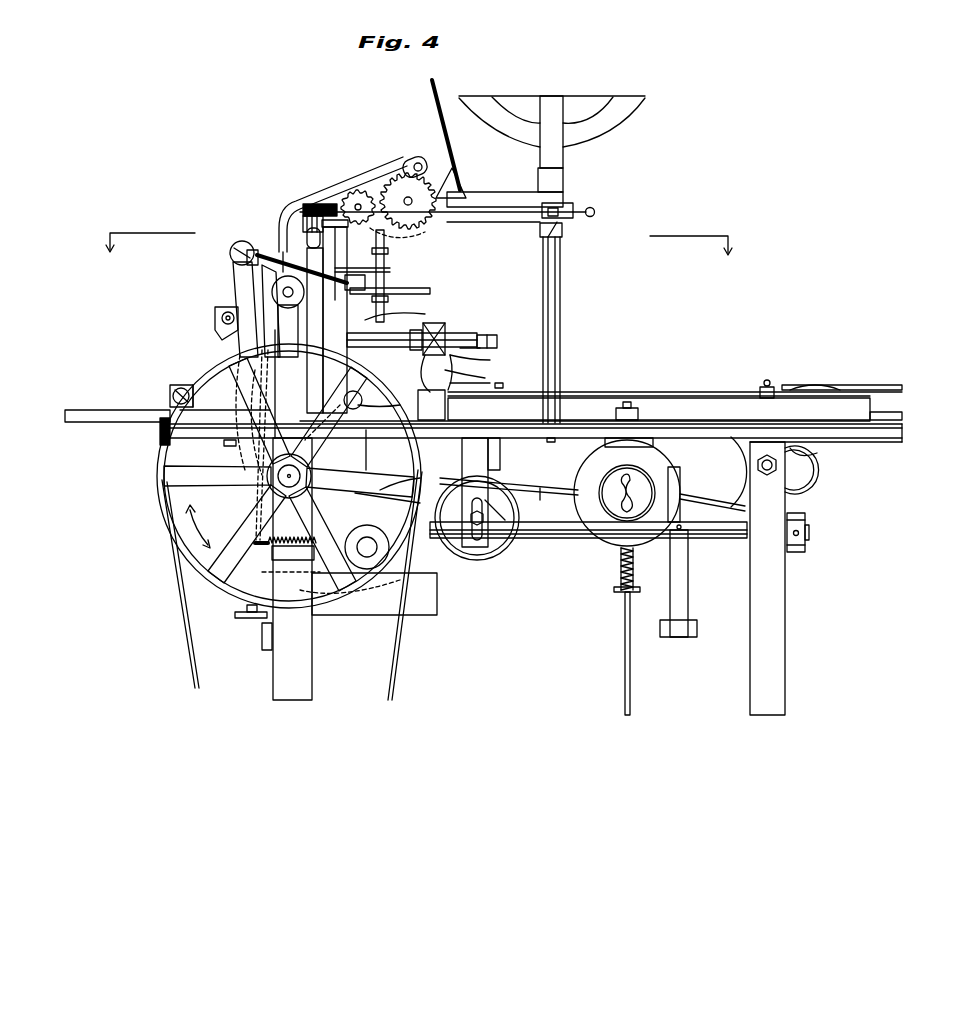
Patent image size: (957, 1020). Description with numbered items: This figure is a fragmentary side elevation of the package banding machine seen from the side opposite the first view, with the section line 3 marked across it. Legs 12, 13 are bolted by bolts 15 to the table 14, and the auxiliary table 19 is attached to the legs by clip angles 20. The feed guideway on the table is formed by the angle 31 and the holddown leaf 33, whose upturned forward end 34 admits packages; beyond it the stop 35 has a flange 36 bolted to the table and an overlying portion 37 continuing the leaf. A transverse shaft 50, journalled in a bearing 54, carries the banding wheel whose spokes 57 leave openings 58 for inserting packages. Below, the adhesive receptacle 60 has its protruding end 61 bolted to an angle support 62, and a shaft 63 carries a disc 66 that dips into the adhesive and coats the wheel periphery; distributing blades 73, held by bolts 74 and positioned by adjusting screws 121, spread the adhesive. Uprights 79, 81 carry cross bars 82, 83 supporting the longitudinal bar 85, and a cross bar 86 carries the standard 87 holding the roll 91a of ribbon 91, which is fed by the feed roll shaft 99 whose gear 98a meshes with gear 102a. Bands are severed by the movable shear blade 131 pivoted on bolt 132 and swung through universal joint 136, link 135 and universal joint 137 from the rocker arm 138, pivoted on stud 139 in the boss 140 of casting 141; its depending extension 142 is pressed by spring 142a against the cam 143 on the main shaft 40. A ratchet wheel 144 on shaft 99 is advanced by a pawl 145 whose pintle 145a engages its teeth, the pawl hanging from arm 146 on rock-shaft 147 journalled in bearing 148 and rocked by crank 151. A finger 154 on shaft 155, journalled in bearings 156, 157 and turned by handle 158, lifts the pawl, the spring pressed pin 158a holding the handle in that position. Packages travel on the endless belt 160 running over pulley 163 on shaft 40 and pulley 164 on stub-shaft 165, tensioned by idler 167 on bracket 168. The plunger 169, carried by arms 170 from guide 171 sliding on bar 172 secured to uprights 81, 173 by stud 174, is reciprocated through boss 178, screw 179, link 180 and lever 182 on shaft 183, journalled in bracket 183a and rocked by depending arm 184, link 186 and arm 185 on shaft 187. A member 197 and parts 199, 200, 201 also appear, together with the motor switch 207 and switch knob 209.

The section line 3- 3 is at (417, 257).
The leg 12 is at (288, 665).
The leg 13 is at (785, 660).
The table 14 is at (706, 432).
The bolts 15 is at (765, 385).
The auxiliary table 19 is at (905, 438).
The clip angles 20 is at (817, 453).
The angle 31 is at (868, 405).
The leaf 33 is at (660, 395).
The forward end of leaf 34 is at (838, 385).
The stop 35 is at (585, 429).
The flange 36 is at (387, 486).
The overlying portion 37 is at (475, 376).
The shaft 40 is at (292, 478).
The shaft 50 is at (350, 410).
The bearing 54 is at (359, 459).
The spokes 57 is at (425, 314).
The openings 58 is at (425, 322).
The receptacle 60 is at (370, 608).
The protruding end 61 is at (232, 615).
The angle support 62 is at (262, 625).
The shaft 63 is at (375, 570).
The disc 66 is at (408, 560).
The distributing blades 73 is at (215, 440).
The bolts 74 is at (224, 452).
The upright 79 is at (560, 305).
The upright 81 is at (355, 322).
The cross bar 82 is at (563, 232).
The cross bar 83 is at (332, 263).
The longitudinal cross bar 85 is at (495, 200).
The cross bar 86 is at (560, 175).
The standard 87 is at (560, 110).
The ribbon 91 is at (446, 120).
The roll 91a is at (488, 110).
The gear 98a is at (425, 236).
The shaft 99 is at (429, 203).
The gear 102a is at (360, 200).
The adjusting screws 121 is at (158, 425).
The movable shear blade 131 is at (430, 292).
The bolt 132 is at (384, 304).
The link 135 is at (279, 218).
The universal joint 136 is at (392, 270).
The universal joint 137 is at (248, 248).
The rocker arm 138 is at (238, 280).
The stud 139 is at (218, 363).
The boss 140 is at (230, 352).
The casting 141 is at (270, 330).
The rack 142 is at (260, 540).
The spring 142a is at (298, 560).
The cam 143 is at (307, 476).
The ratchet wheel 144 is at (440, 188).
The pawl 145 is at (398, 140).
The ratchet engaging pintle 145a is at (416, 158).
The arm 146 is at (230, 258).
The rock-shaft 147 is at (288, 276).
The bearing 148 is at (270, 260).
The crank 151 is at (232, 300).
The finger 154 is at (313, 197).
The shaft 155 is at (515, 218).
The bearing 156 is at (325, 204).
The bearing 157 is at (560, 203).
The handle 158 is at (596, 210).
The spring pressed pin 158a is at (545, 240).
The endless belt 160 is at (572, 503).
The pulley 163 is at (262, 498).
The pulley 164 is at (796, 480).
The stub-shaft 165 is at (767, 475).
The idler 167 is at (480, 560).
The bracket 168 is at (515, 540).
The plunger 169 is at (445, 405).
The arms 170 is at (490, 360).
The guide 171 is at (470, 330).
The track or bar 172 is at (445, 322).
The upright 173 is at (330, 298).
The stud 174 is at (353, 392).
The boss 178 is at (427, 376).
The screw 179 is at (480, 348).
The link 180 is at (497, 340).
The lever 182 is at (490, 383).
The shaft 183 is at (545, 543).
The bracket 183a is at (520, 455).
The depending arm 184 is at (665, 580).
The arm 185 is at (680, 475).
The link 186 is at (690, 575).
The shaft 187 is at (552, 502).
The platform 197 is at (97, 425).
The roller 199 is at (170, 385).
The roller block 200 is at (168, 398).
The plate 201 is at (195, 372).
The switch 207 is at (655, 458).
The switch knob 209 is at (622, 500).